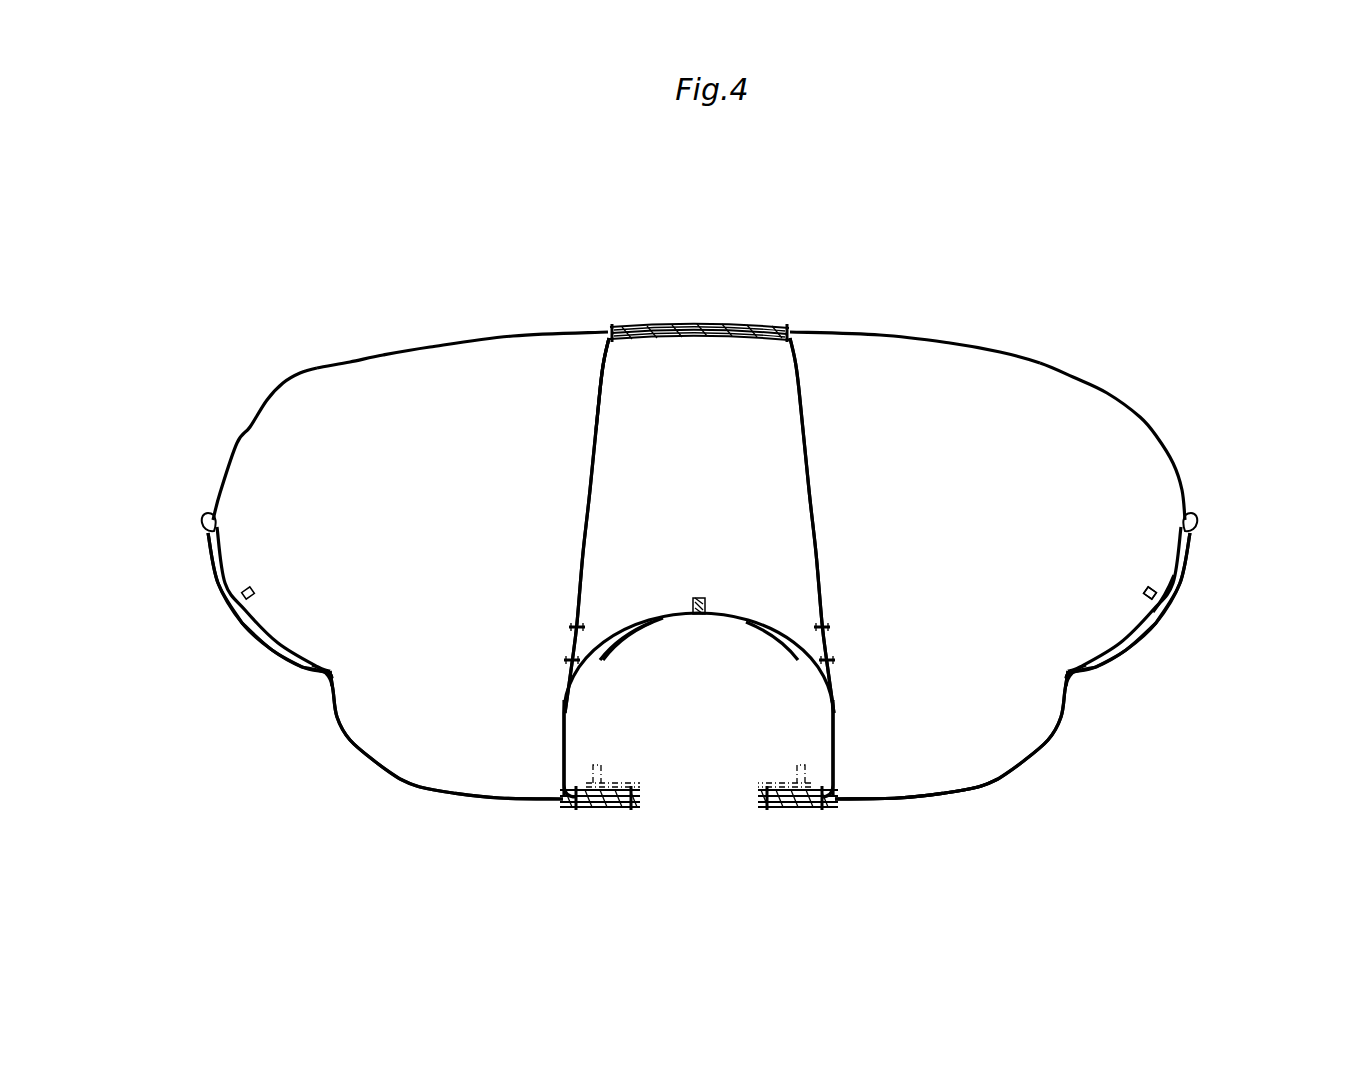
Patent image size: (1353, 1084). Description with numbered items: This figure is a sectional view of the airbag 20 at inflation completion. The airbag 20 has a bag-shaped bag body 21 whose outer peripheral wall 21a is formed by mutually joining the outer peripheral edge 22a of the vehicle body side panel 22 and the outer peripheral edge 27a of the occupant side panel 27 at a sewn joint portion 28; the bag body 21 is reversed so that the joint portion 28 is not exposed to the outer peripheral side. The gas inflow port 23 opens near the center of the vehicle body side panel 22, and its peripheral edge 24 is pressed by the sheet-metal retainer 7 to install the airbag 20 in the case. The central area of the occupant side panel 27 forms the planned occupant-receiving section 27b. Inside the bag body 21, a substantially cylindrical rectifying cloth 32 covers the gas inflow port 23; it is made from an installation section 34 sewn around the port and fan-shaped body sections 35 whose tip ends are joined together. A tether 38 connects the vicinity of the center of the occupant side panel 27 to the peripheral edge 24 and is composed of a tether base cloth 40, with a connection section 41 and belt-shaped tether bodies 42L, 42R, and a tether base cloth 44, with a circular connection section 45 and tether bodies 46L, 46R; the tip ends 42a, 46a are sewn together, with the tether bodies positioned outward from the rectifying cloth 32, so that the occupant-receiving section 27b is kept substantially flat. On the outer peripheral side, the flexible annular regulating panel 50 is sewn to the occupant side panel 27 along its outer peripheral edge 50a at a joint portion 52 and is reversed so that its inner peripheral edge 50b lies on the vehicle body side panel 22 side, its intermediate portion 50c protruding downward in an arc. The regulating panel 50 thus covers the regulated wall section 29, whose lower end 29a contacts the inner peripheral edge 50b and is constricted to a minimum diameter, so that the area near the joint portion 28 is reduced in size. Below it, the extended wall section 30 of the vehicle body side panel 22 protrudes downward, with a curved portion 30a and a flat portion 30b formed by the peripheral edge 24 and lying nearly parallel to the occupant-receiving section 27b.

The airbag 20 is at (1135, 290).
The bag body 21 is at (445, 333).
The outer peripheral wall 21a is at (238, 443).
The vehicle body side panel 22 is at (945, 802).
The outer peripheral edge 22a is at (1150, 594).
The gas inflow port 23 is at (751, 802).
The peripheral edge 24 is at (798, 806).
The occupant side panel 27 is at (950, 333).
The outer peripheral edge 27a is at (1155, 590).
The planned occupant-receiving section 27b is at (738, 330).
The joint portion 28 is at (250, 592).
The regulated wall section 29 is at (289, 633).
The lower end 29a is at (333, 672).
The extended wall section 30 is at (337, 870).
The curved portion 30a is at (347, 730).
The flat portion 30b is at (520, 802).
The rectifying cloth 32 is at (660, 612).
The installation section 34 is at (608, 778).
The body section 35 is at (630, 640).
The tether 38 is at (590, 386).
The tether base cloth 40 is at (820, 378).
The connection section 41 is at (675, 330).
The tether body 42L is at (590, 490).
The tether body 42R is at (806, 490).
The tip end 42a is at (576, 625).
The tether base cloth 44 is at (553, 775).
The connection section 45 is at (590, 806).
The tether body 46L is at (561, 711).
The tether body 46R is at (836, 711).
The tip end 46a is at (574, 637).
The regulating panel 50 is at (230, 630).
The outer peripheral edge 50a is at (204, 534).
The inner peripheral edge 50b is at (325, 688).
The intermediate portion 50c is at (260, 646).
The joint portion 52 is at (217, 527).
The retainer 7 is at (790, 778).